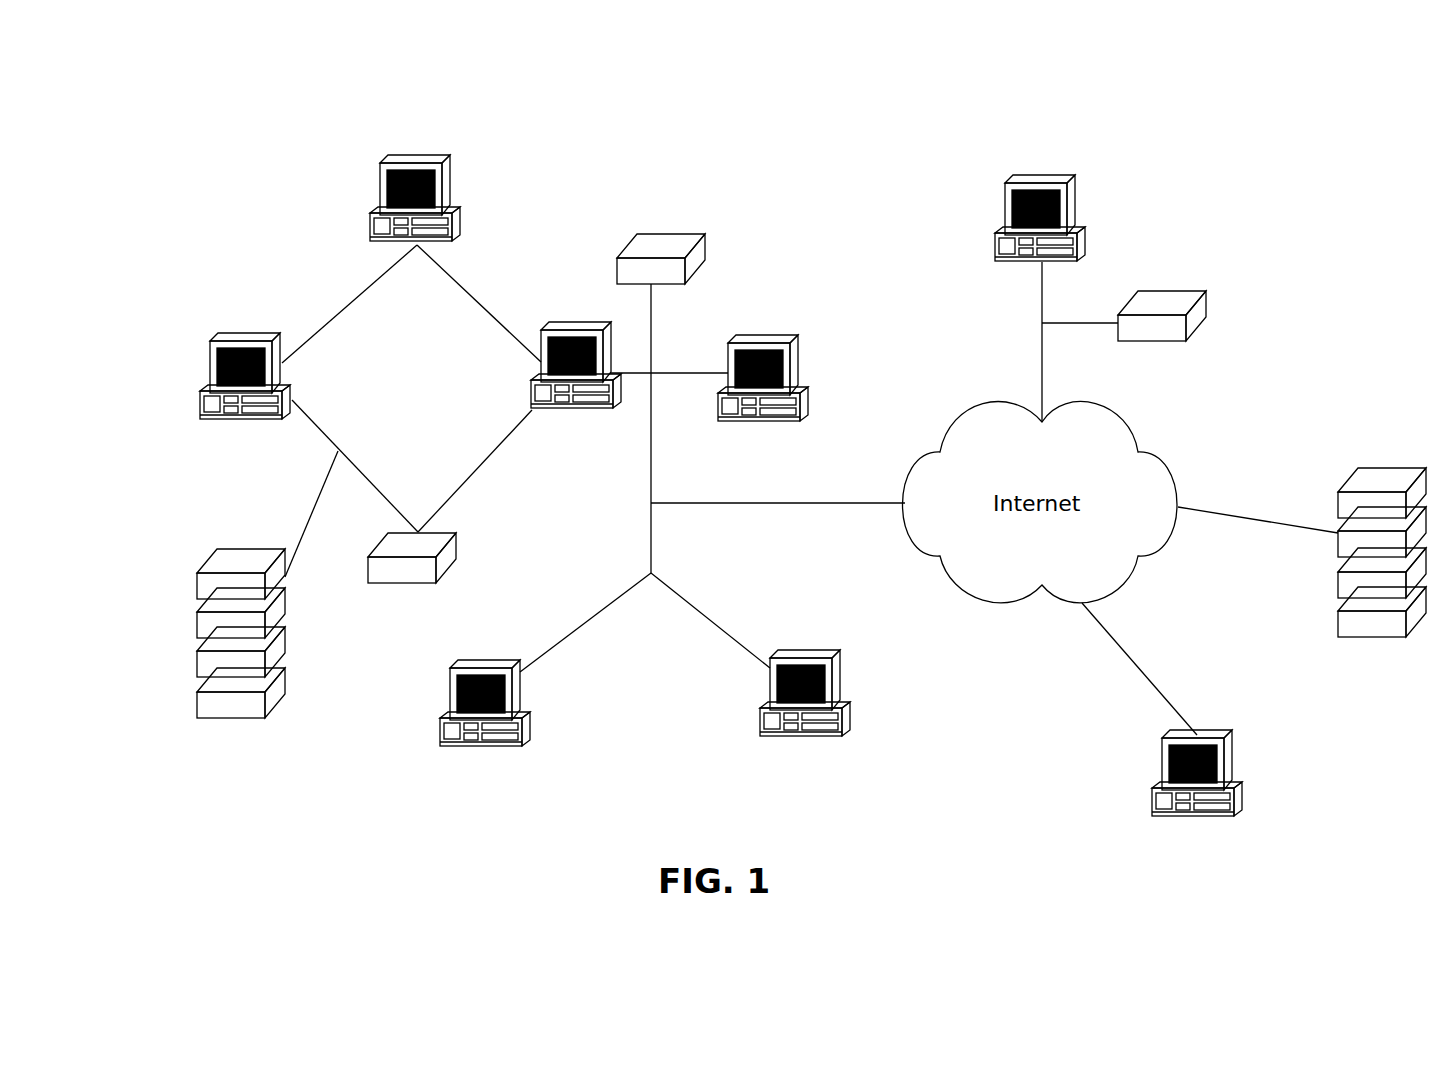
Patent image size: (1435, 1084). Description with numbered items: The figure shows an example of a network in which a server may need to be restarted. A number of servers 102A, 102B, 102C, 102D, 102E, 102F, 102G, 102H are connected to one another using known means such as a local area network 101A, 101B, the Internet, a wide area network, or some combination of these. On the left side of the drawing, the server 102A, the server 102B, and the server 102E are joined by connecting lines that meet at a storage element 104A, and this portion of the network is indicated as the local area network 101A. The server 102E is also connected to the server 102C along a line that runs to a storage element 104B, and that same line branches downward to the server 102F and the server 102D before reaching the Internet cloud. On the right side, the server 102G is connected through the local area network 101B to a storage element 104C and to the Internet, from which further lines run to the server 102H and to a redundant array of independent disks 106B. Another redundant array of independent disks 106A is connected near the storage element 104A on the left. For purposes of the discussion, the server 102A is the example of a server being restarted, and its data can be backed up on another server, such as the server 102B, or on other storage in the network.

The local area network 101A is at (487, 308).
The local area network 101B is at (1040, 298).
The server 102A is at (450, 186).
The server 102B is at (210, 363).
The server 102C is at (798, 358).
The server 102D is at (838, 687).
The server 102E is at (566, 418).
The server 102F is at (518, 706).
The server 102G is at (1046, 177).
The server 102H is at (1230, 770).
The storage element 104A is at (400, 583).
The storage element 104B is at (658, 234).
The storage element 104C is at (1166, 290).
The RAID 106A is at (197, 593).
The RAID 106B is at (1338, 517).